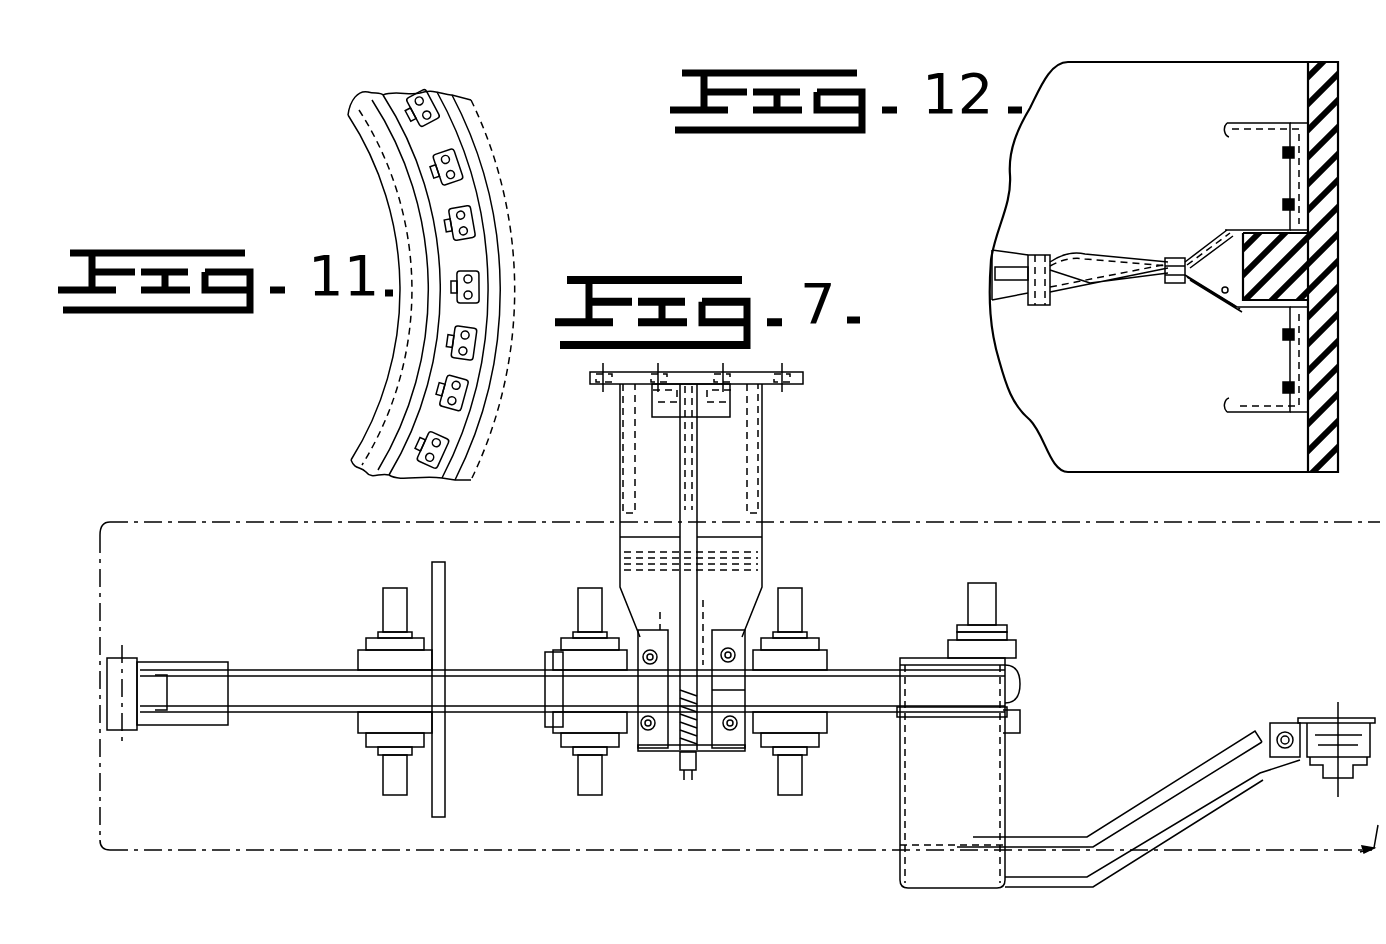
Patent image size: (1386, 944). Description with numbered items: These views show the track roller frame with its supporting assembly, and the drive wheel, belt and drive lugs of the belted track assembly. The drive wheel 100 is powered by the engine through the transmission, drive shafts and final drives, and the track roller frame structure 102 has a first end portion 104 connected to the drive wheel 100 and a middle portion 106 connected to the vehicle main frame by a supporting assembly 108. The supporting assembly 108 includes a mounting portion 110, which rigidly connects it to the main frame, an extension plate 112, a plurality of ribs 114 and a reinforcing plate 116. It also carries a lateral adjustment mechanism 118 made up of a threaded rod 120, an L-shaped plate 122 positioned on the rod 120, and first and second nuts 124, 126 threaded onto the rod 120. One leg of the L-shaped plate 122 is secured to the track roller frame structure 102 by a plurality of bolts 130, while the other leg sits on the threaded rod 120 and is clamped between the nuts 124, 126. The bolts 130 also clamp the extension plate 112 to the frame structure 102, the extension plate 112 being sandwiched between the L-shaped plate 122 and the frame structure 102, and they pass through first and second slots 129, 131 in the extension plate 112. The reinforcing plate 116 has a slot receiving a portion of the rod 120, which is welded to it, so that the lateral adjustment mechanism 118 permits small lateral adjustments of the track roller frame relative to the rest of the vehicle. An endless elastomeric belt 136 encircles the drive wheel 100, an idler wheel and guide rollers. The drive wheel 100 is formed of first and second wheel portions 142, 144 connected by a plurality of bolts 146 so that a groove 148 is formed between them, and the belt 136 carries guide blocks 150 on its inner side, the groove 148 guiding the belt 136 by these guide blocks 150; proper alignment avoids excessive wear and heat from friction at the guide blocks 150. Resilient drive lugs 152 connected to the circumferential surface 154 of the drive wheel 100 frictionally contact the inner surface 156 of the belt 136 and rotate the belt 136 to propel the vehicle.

In FIG. 12, the drive wheel 100 is at (1128, 271).
In FIG. 7, the track roller frame structure 102 is at (987, 767).
In FIG. 7, the first end portion 104 is at (1301, 772).
In FIG. 7, the middle portion 106 is at (620, 665).
In FIG. 7, the supporting assembly 108 is at (765, 537).
In FIG. 7, the mounting portion 110 is at (607, 394).
In FIG. 7, the extension plate 112 is at (622, 535).
In FIG. 7, the ribs 114 is at (678, 440).
In FIG. 7, the reinforcing plate 116 is at (693, 553).
In FIG. 7, the lateral adjustment mechanism 118 is at (669, 755).
In FIG. 7, the threaded rod 120 is at (695, 766).
In FIG. 7, the L-shaped plate 122 is at (740, 690).
In FIG. 7, the first nut 124 is at (680, 753).
In FIG. 7, the second nut 126 is at (700, 748).
In FIG. 7, the first slot 129 is at (745, 690).
In FIG. 7, the bolts 130 is at (735, 658).
In FIG. 7, the second slot 131 is at (660, 625).
In FIG. 11, the endless elastomeric belt 136 is at (478, 195).
In FIG. 12, the endless elastomeric belt 136 is at (1305, 474).
In FIG. 12, the first wheel portion 142 is at (1250, 121).
In FIG. 12, the second wheel portion 144 is at (1230, 413).
In FIG. 12, the bolts 146 is at (1040, 308).
In FIG. 12, the groove 148 is at (1165, 284).
In FIG. 12, the guide blocks 150 is at (1262, 305).
In FIG. 11, the resilient drive lugs 152 is at (472, 300).
In FIG. 12, the resilient drive lugs 152 is at (1285, 168).
In FIG. 12, the circumferential surface 154 is at (1350, 64).
In FIG. 11, the inner surface 156 is at (432, 432).
In FIG. 12, the inner surface 156 is at (1307, 435).